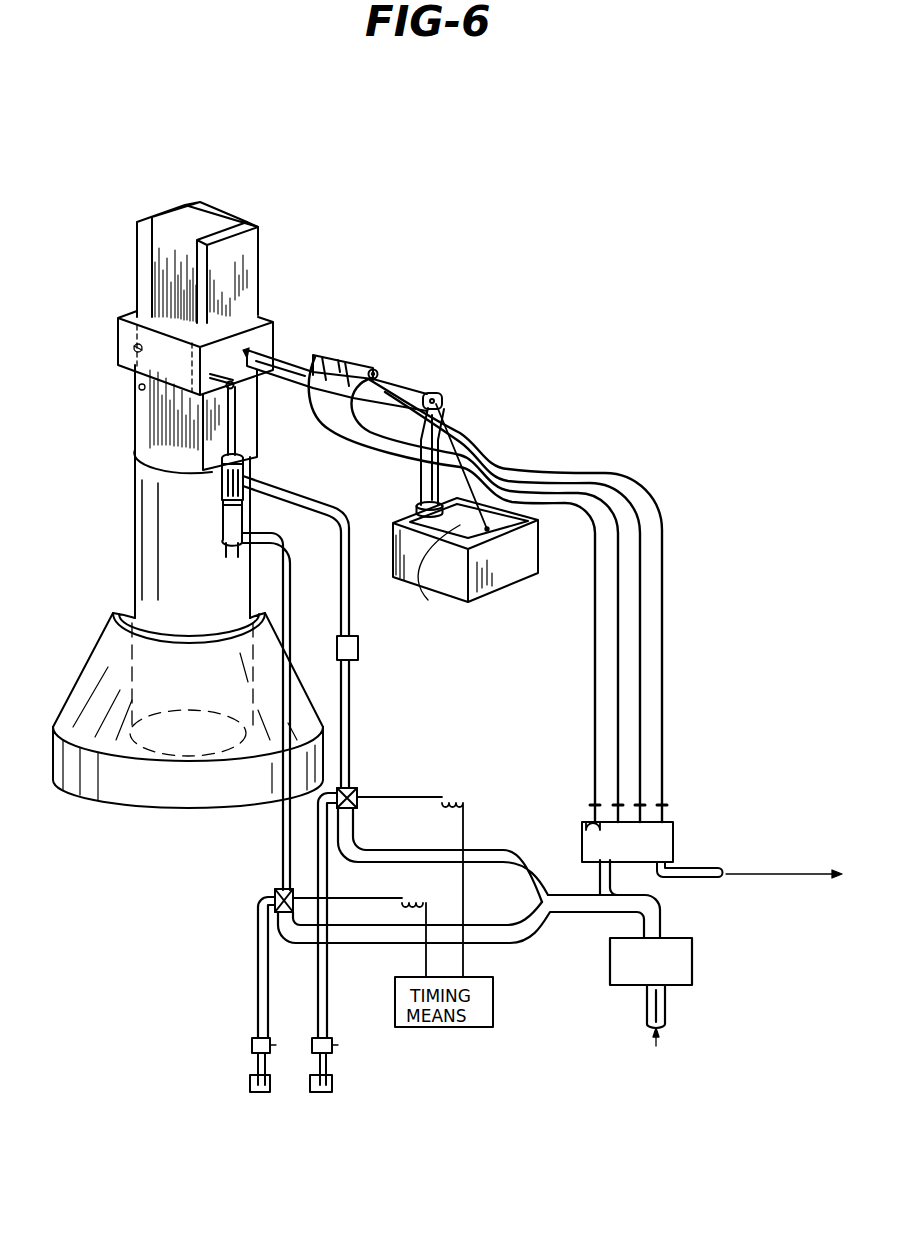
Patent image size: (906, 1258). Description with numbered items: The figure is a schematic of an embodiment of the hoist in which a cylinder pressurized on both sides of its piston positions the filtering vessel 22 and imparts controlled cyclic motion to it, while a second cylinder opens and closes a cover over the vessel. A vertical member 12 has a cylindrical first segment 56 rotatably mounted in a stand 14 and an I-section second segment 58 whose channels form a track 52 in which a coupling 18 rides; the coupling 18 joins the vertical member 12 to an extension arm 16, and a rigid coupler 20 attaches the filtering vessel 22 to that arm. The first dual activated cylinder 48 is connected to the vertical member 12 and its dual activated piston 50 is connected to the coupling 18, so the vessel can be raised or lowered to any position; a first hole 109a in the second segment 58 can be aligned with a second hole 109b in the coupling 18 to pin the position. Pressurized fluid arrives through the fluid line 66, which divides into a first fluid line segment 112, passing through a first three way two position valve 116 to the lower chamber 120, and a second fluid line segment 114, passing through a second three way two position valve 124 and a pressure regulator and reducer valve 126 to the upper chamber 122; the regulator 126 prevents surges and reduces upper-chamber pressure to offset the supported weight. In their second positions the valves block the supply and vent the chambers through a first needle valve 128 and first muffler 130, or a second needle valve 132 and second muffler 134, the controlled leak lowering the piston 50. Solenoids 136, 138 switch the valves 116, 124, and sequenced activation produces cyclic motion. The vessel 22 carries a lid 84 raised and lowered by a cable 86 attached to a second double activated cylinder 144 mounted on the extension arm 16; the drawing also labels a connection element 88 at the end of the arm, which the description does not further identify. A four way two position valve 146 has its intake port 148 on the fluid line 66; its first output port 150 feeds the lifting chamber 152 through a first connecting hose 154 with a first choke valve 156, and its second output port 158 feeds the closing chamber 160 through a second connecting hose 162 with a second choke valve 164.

The vertical member 12 is at (130, 462).
The stand 14 is at (95, 665).
The extension arm 16 is at (280, 355).
The coupling 18 is at (133, 318).
The rigid coupler 20 is at (420, 504).
The filtering vessel 22 is at (535, 580).
The first dual activated cylinder 48 is at (218, 490).
The dual activated piston 50 is at (217, 519).
The track 52 is at (228, 225).
The first segment 56 is at (135, 546).
The second segment 58 is at (168, 214).
The fluid line 66 is at (643, 1000).
The lid 84 is at (439, 572).
The cable 86 is at (448, 428).
The connector 88 is at (414, 389).
The first hole 109a is at (134, 348).
The second hole 109b is at (139, 387).
The first fluid line segment 112 is at (528, 942).
The second fluid line segment 114 is at (441, 848).
The first three way two position valve 116 is at (281, 889).
The lower chamber 120 is at (244, 546).
The upper chamber 122 is at (258, 462).
The second three way two position valve 124 is at (356, 789).
The pressure regulator and reducer valve 126 is at (357, 643).
The first needle valve 128 is at (252, 1038).
The first muffler 130 is at (250, 1081).
The second needle valve 132 is at (329, 1038).
The second muffler 134 is at (332, 1082).
The solenoid 136 is at (413, 898).
The solenoid 138 is at (457, 798).
The second double activated cylinder 144 is at (337, 354).
The four way two position valve 146 is at (678, 838).
The intake port 148 is at (598, 877).
The first output port 150 is at (650, 805).
The lifting chamber 152 is at (376, 371).
The first connecting hose 154 is at (663, 592).
The first choke valve 156 is at (668, 805).
The second output port 158 is at (590, 822).
The closing chamber 160 is at (316, 355).
The second connecting hose 162 is at (592, 705).
The second choke valve 164 is at (594, 804).